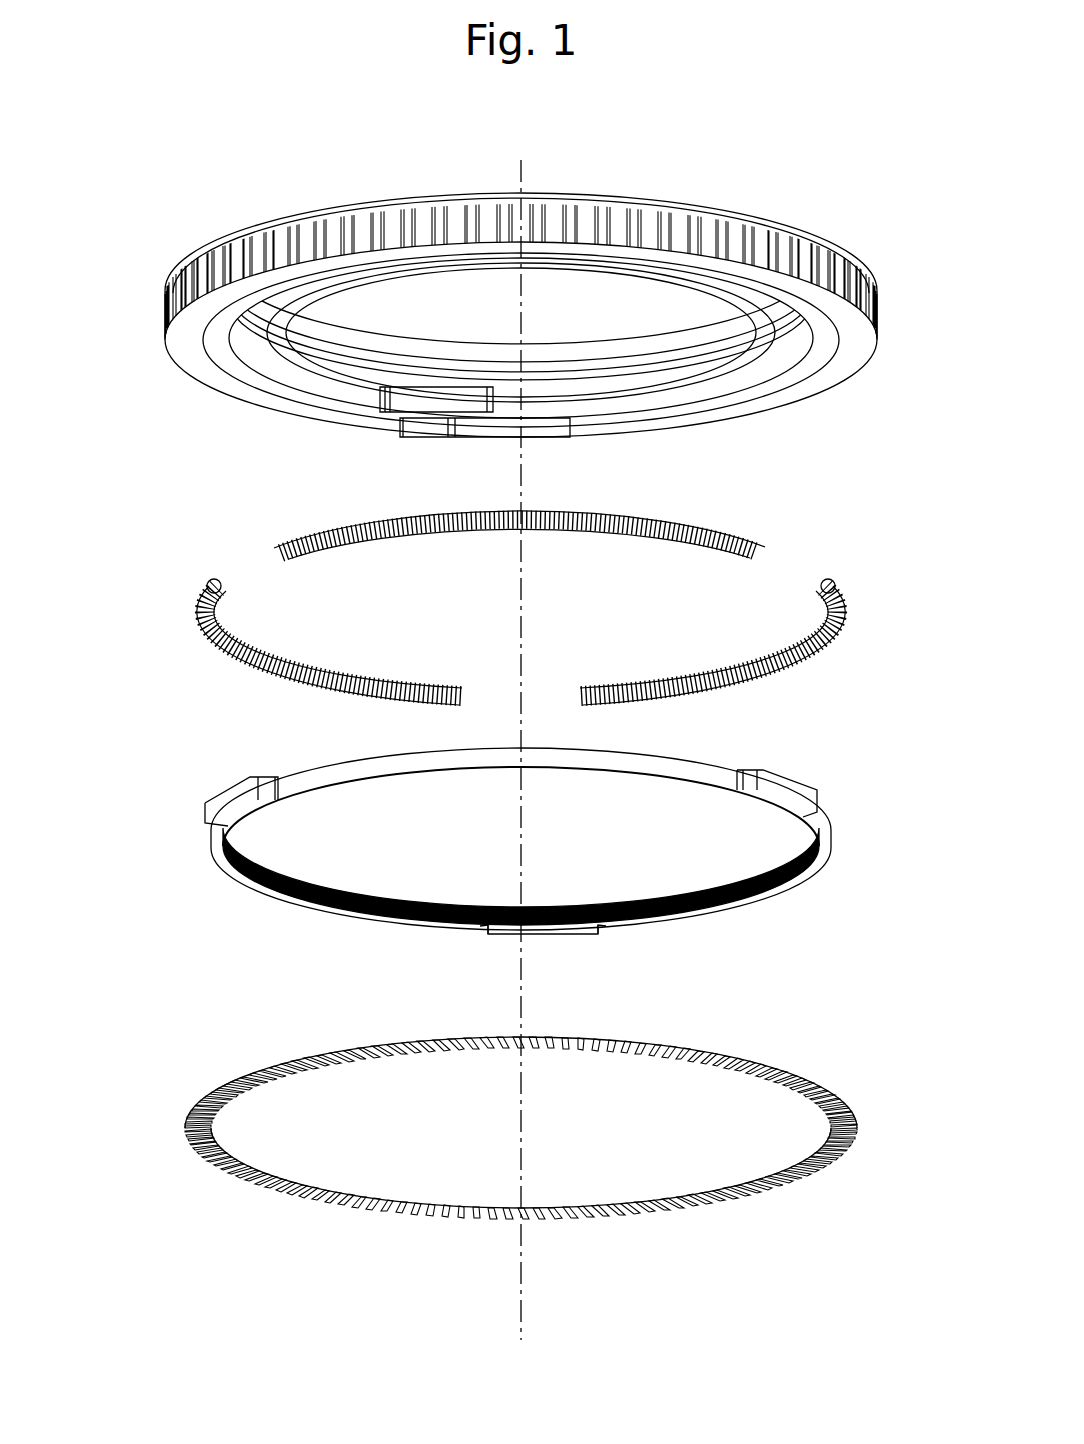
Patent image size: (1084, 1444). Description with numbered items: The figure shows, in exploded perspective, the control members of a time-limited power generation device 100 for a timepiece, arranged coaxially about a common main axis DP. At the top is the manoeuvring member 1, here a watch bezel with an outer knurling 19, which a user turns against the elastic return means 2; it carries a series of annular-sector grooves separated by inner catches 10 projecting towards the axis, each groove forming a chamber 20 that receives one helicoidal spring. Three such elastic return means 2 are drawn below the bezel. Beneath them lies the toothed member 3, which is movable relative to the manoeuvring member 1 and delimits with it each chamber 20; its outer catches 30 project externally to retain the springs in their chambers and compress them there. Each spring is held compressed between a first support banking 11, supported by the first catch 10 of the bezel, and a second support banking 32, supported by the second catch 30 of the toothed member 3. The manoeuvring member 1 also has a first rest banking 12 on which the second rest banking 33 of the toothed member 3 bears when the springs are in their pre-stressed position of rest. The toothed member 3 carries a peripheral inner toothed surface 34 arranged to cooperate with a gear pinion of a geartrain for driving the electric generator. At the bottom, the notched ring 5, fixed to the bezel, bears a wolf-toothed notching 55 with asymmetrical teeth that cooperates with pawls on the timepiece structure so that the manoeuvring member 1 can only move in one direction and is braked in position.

The manoeuvring member 1 is at (733, 185).
The knurled outer toothing of bezel 19 is at (868, 290).
The chamber 20 is at (802, 330).
The first catch 10 is at (430, 403).
The first support banking 11 is at (378, 397).
The first rest banking 12 is at (502, 410).
The elastic return means 2 is at (688, 514).
The time-limited power generation device 100 is at (133, 775).
The toothed member 3 is at (860, 872).
The second catch 30 is at (547, 935).
The second support banking 32 is at (604, 932).
The second rest banking 33 is at (486, 932).
The toothed surface 34 is at (748, 905).
The notched ring 5 is at (860, 1196).
The wolf-toothed notching 55 is at (697, 1207).
The main axis DP is at (518, 1311).